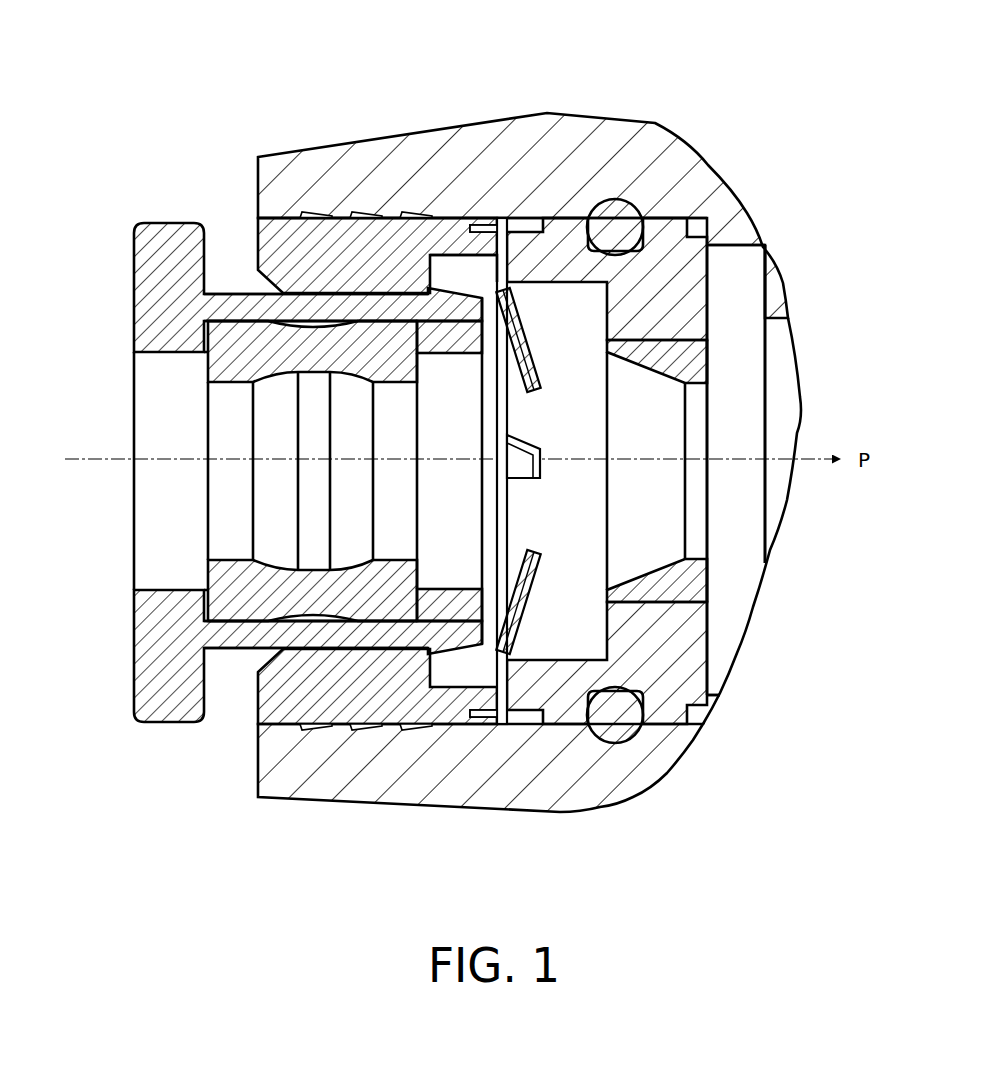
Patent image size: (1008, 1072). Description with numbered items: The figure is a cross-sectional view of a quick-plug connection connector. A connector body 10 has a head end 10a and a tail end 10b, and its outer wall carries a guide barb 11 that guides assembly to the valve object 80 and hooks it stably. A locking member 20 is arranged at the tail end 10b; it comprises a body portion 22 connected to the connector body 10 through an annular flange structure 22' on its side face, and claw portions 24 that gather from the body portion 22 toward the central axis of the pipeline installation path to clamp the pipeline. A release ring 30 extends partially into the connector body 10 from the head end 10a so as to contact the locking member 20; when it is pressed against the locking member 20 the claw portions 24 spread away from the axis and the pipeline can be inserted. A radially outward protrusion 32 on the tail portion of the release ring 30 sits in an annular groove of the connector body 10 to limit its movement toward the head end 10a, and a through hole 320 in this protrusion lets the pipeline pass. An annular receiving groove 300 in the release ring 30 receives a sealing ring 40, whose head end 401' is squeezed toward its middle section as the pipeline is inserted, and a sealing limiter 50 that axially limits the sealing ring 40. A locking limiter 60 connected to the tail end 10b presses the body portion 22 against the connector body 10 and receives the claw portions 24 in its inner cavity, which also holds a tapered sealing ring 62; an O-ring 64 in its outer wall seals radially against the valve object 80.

The connector body 10 is at (529, 494).
The head end 10a is at (143, 810).
The tail end 10b is at (550, 829).
The guide barb 11 is at (482, 147).
The locking member 20 is at (640, 373).
The body portion 22 is at (546, 385).
The annular flange structure 22' is at (446, 375).
The claw portions 24 is at (565, 365).
The release ring 30 is at (271, 490).
The radially outward protrusion 32 is at (441, 179).
The sealing ring 40 is at (239, 435).
The sealing limiter 50 is at (427, 586).
The locking limiter 60 is at (651, 420).
The tapered sealing ring 62 is at (727, 402).
The O-ring 64 is at (666, 409).
The valve object 80 is at (758, 428).
The annular receiving groove 300 is at (312, 353).
The through hole 320 is at (687, 504).
The head end of the sealing ring 401' is at (262, 495).